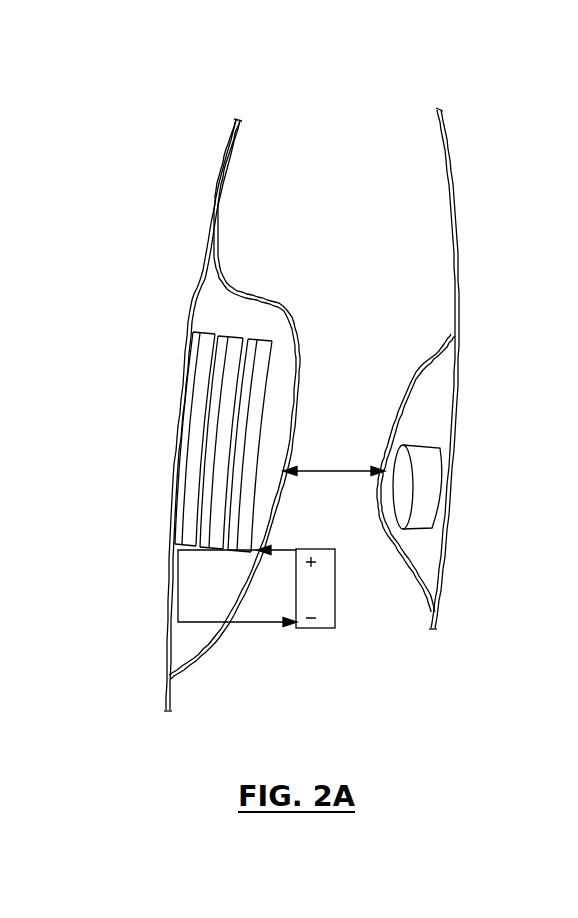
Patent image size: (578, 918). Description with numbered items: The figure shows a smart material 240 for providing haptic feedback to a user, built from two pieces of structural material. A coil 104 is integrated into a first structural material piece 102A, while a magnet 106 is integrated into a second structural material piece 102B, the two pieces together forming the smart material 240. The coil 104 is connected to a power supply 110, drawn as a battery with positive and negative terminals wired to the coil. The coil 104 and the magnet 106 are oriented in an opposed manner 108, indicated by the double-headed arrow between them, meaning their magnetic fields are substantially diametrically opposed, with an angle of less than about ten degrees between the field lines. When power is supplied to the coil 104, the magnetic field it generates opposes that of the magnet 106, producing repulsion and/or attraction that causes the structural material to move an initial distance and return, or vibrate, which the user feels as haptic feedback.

The smart material 240 is at (481, 149).
The structural material piece 102A is at (215, 399).
The structural material piece 102B is at (462, 420).
The coil 104 is at (266, 409).
The magnet 106 is at (474, 473).
The opposed manner 108 is at (334, 485).
The power supply 110 is at (310, 607).